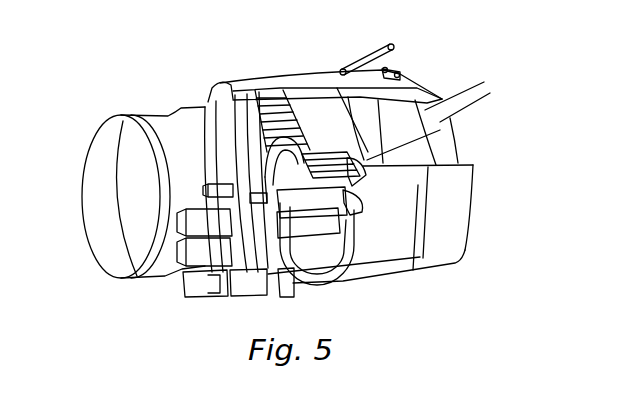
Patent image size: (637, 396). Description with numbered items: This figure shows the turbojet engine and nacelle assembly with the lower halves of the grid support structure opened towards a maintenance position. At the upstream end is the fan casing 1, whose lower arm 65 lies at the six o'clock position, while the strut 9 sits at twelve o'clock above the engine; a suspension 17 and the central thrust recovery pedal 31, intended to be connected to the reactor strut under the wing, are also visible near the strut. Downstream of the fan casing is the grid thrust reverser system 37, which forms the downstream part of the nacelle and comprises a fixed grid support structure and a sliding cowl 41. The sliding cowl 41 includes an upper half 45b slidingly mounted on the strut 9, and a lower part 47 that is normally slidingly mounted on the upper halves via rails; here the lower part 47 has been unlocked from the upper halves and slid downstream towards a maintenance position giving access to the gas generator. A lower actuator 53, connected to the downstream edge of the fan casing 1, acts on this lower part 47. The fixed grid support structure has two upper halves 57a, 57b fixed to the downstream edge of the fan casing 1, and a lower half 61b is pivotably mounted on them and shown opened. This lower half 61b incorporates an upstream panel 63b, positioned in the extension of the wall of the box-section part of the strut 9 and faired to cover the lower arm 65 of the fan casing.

The fan casing 1 is at (160, 110).
The strut 9 is at (292, 64).
The suspension 17 is at (374, 46).
The central thrust recovery pedal 31 is at (458, 97).
The grid thrust reverser system 37 is at (388, 290).
The sliding cowl 41 is at (448, 146).
The upper half of the sliding cowl 45b is at (448, 158).
The lower part of the sliding cowl 47 is at (453, 220).
The lower actuator 53 is at (280, 276).
The upper half of the grid support structure 57a is at (213, 90).
The upper half of the grid support structure 57b is at (300, 113).
The lower half of the grid support structure 61b is at (440, 130).
The upstream panel 63b is at (312, 226).
The lower arm of the fan casing 65 is at (243, 278).